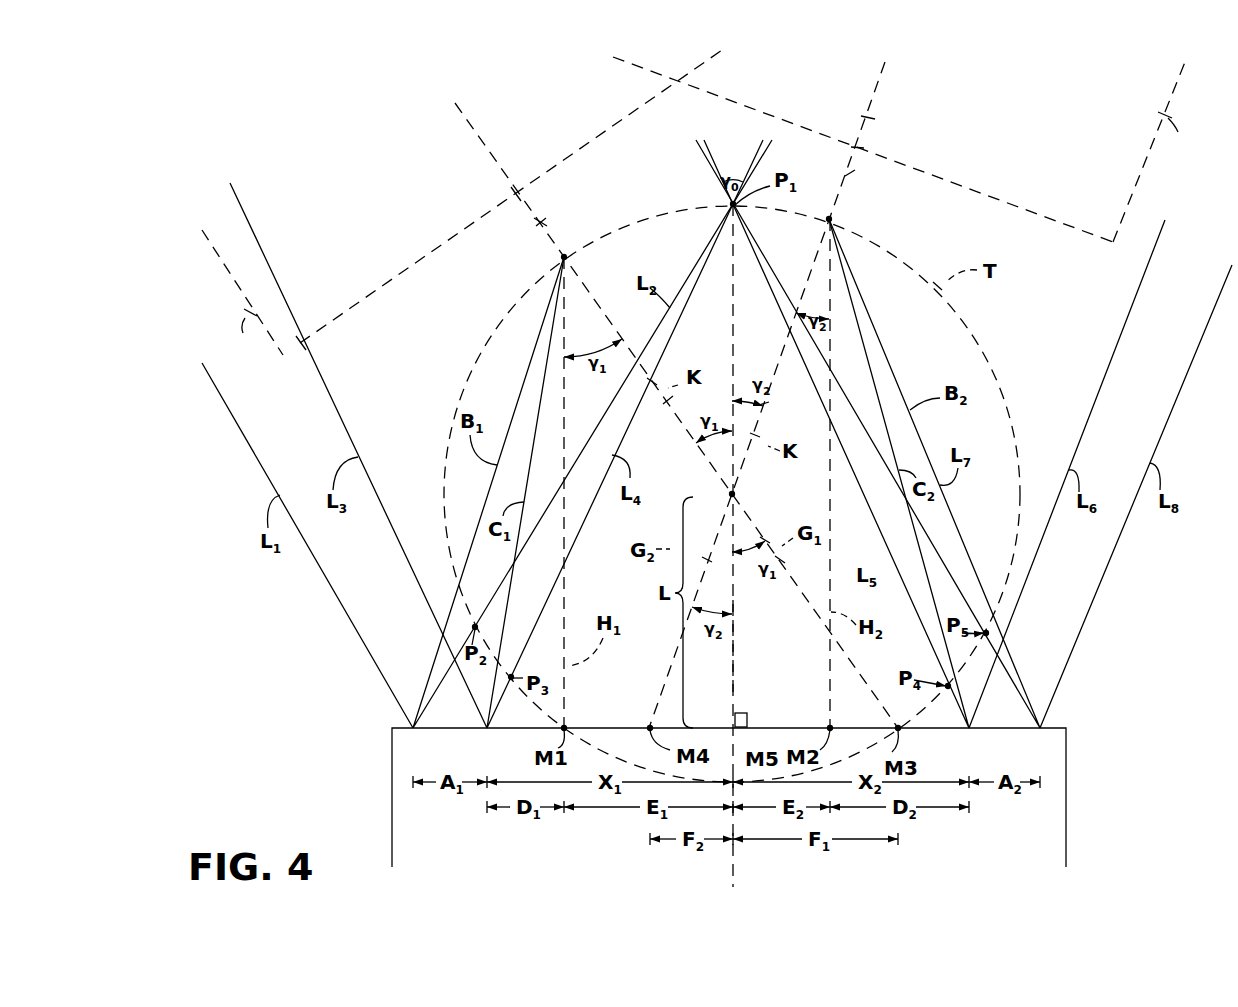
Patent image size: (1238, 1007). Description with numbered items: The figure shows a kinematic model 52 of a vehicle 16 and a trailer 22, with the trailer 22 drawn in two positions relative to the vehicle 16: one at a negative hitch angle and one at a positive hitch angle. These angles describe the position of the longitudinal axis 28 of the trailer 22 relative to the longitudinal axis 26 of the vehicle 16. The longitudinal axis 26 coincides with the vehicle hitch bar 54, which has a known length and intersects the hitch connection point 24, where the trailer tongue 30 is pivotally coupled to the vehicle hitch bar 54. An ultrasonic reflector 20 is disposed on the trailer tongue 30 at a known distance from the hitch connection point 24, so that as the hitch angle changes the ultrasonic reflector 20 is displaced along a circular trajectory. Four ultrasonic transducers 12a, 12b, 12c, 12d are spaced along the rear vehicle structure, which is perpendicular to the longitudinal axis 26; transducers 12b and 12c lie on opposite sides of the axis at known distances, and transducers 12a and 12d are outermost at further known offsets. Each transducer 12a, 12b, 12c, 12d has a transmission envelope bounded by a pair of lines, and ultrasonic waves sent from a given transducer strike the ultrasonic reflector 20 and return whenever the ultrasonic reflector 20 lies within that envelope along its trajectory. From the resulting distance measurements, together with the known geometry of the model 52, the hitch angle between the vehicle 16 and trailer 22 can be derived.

The ultrasonic transducer 12a is at (413, 729).
The ultrasonic transducer 12b is at (487, 729).
The ultrasonic transducer 12c is at (969, 729).
The ultrasonic transducer 12d is at (1040, 729).
The vehicle 16 is at (1067, 832).
The ultrasonic reflector 20 is at (566, 255).
The trailer 22 is at (1193, 143).
The hitch connection point 24 is at (736, 495).
The longitudinal axis of the vehicle 26 is at (737, 870).
The longitudinal axis of the trailer 28 is at (490, 150).
The trailer tongue 30 is at (542, 220).
The kinematic model 52 is at (398, 136).
The vehicle hitch bar 54 is at (736, 657).